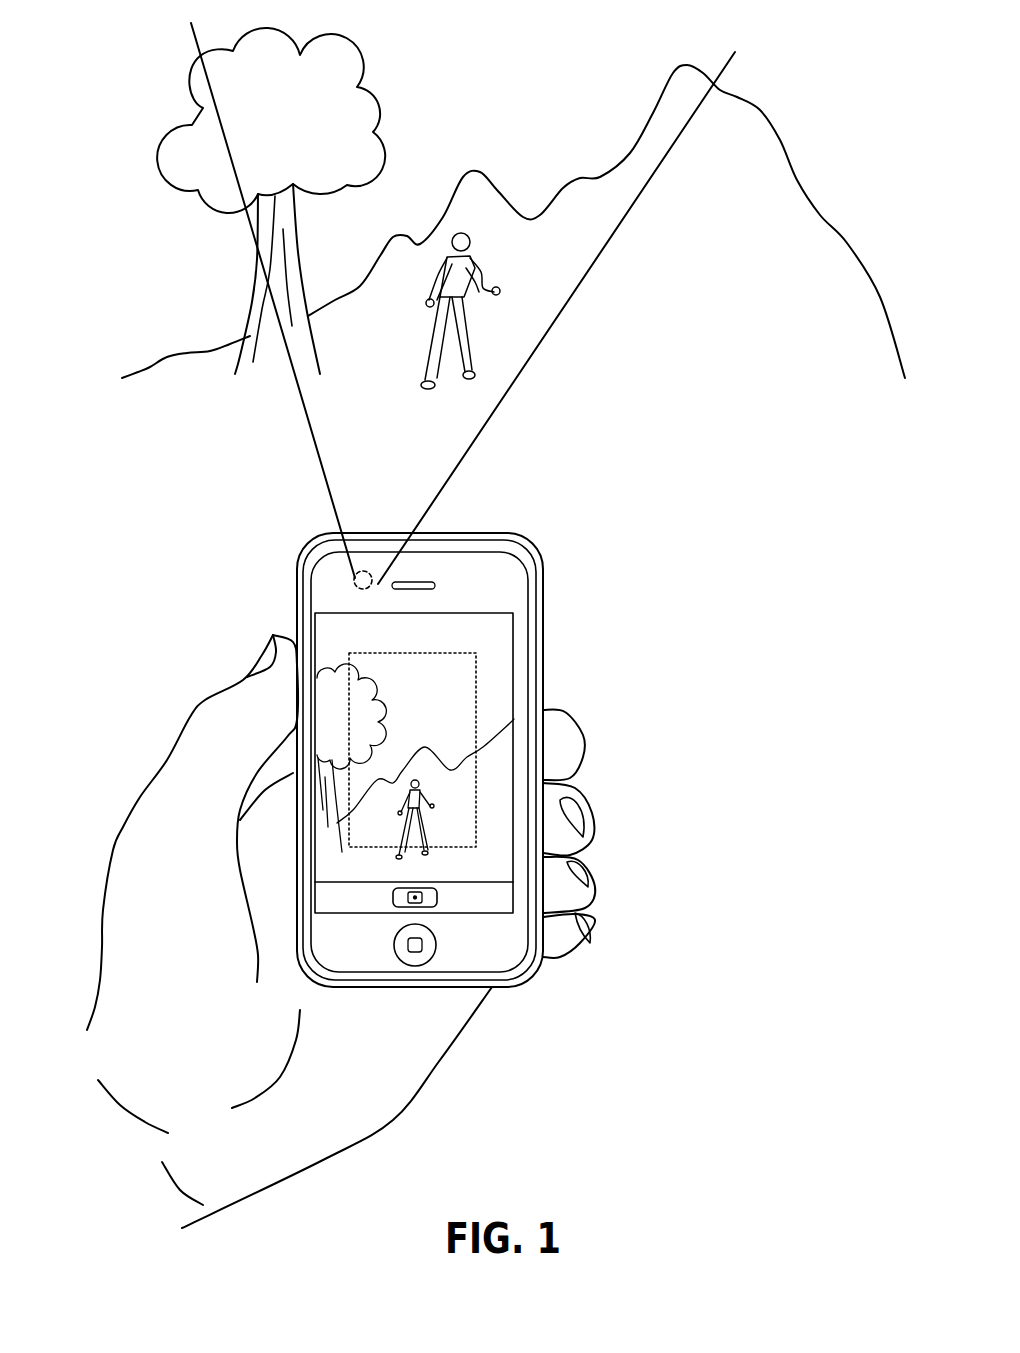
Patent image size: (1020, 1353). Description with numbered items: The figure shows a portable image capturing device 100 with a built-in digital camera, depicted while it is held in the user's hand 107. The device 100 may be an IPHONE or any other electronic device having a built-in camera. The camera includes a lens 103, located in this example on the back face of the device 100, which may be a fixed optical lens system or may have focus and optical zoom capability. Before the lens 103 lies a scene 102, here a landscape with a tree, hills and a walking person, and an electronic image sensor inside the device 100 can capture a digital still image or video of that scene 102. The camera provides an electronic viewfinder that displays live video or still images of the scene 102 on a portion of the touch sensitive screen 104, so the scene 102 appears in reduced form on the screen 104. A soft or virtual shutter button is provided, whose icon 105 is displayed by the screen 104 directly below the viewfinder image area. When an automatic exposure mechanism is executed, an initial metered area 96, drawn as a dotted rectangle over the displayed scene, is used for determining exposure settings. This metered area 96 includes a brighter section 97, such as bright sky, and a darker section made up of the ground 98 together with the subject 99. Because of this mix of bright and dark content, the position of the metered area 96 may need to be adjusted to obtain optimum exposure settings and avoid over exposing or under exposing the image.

The initial metered area 96 is at (423, 653).
The brighter section 97 is at (398, 691).
The ground 98 is at (467, 805).
The subject 99 is at (420, 833).
The portable image capturing device 100 is at (316, 536).
The scene 102 is at (771, 430).
The lens 103 is at (357, 583).
The touch sensitive screen 104 is at (303, 858).
The shutter button icon 105 is at (392, 897).
The user's hand 107 is at (173, 773).